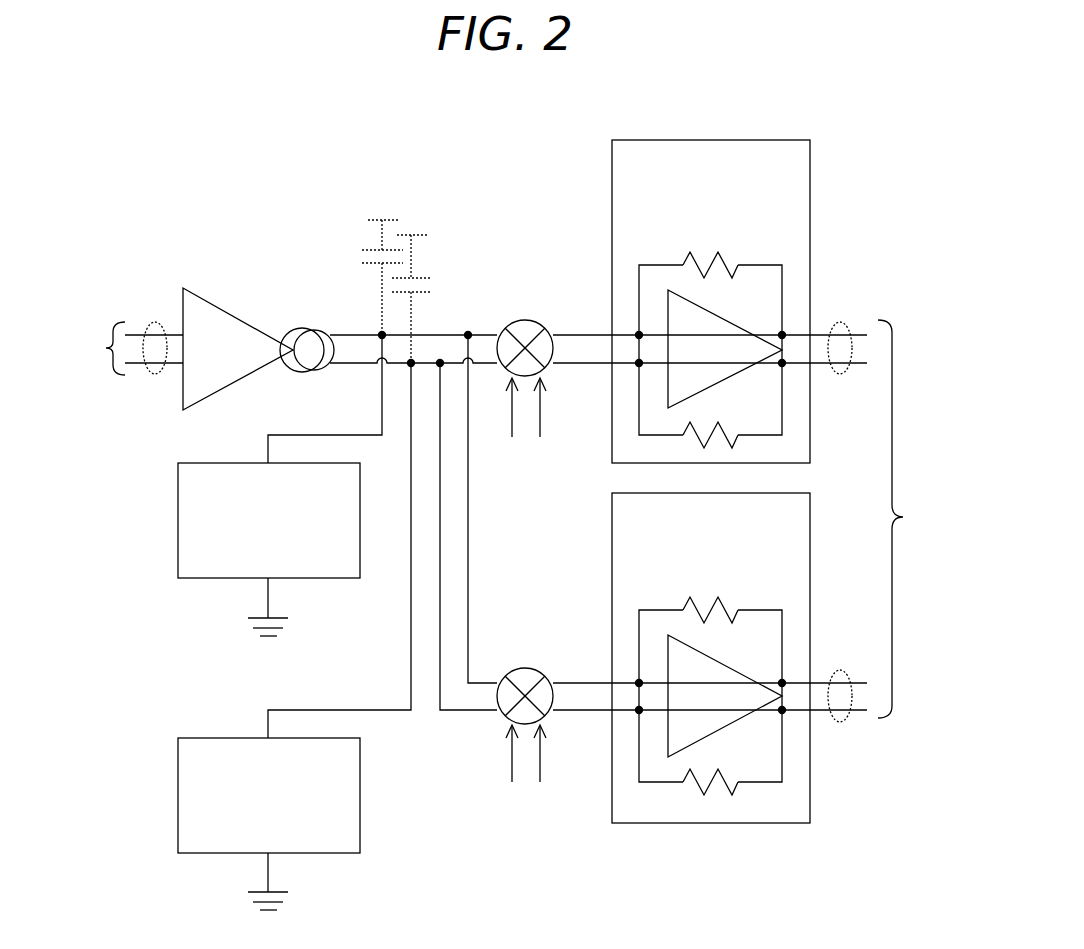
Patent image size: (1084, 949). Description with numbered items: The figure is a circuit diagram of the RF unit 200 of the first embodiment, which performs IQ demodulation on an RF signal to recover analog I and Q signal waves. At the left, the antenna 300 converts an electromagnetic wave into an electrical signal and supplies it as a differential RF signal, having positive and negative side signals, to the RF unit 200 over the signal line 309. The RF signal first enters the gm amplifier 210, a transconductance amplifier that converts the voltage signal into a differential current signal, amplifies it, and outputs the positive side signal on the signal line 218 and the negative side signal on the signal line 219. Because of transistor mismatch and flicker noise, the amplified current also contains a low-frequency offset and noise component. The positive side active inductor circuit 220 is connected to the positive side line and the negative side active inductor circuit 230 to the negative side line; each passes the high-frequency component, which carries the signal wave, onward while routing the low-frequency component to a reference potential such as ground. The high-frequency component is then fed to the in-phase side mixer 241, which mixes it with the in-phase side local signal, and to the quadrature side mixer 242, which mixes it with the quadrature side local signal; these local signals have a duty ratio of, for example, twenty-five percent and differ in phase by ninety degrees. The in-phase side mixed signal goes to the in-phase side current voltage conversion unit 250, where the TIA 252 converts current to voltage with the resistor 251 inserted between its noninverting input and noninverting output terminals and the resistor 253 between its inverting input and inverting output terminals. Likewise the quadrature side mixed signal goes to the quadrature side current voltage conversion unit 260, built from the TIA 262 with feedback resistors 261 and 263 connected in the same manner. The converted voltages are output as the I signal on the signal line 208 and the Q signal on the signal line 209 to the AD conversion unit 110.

The RF unit 200 is at (495, 180).
The antenna 300 is at (110, 364).
The signal line 309 is at (155, 322).
The gm amplifier 210 is at (238, 320).
The signal line 218 is at (352, 334).
The signal line 219 is at (356, 365).
The positive side active inductor circuit 220 is at (360, 487).
The negative side active inductor circuit 230 is at (360, 760).
The in-phase side mixer 241 is at (540, 324).
The quadrature side mixer 242 is at (540, 670).
The in-phase side current voltage conversion unit 250 is at (810, 166).
The resistor 251 is at (737, 261).
The trans impedance amplifier 252 is at (727, 320).
The resistor 253 is at (737, 419).
The quadrature side current voltage conversion unit 260 is at (810, 519).
The resistor 261 is at (740, 608).
The TIA 262 is at (727, 665).
The resistor 263 is at (737, 767).
The signal line 208 is at (843, 323).
The signal line 209 is at (842, 670).
The AD conversion unit 110 is at (918, 519).